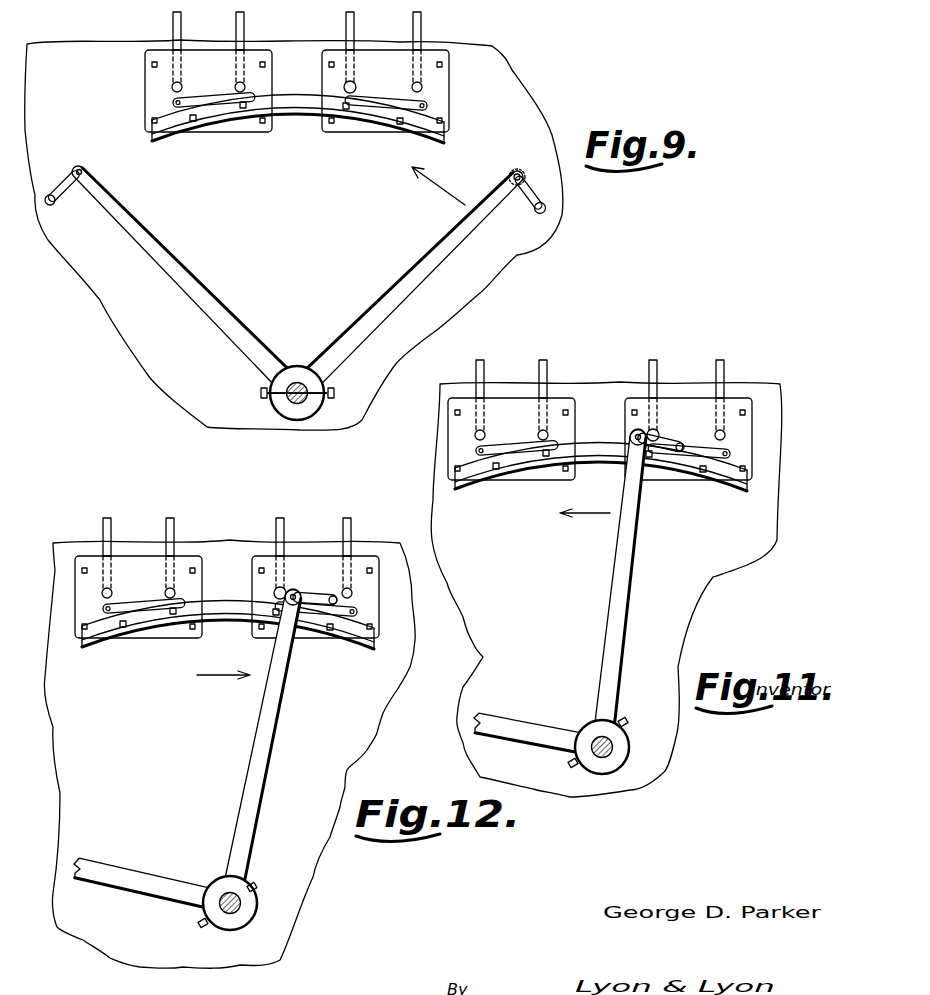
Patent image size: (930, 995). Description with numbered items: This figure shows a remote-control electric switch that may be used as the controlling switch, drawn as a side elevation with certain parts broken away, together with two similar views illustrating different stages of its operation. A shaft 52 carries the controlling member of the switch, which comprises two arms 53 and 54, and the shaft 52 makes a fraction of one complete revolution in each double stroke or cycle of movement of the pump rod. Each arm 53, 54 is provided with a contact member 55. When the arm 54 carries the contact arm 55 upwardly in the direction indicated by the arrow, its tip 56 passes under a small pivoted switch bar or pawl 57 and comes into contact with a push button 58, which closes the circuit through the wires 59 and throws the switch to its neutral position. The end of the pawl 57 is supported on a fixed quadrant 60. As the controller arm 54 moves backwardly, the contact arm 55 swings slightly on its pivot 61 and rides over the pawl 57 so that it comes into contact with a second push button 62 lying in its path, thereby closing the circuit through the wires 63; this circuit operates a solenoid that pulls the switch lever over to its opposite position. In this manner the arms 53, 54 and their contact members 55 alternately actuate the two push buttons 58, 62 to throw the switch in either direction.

In FIG. 9, the shaft 52 is at (298, 384).
In FIG. 11, the shaft 52 is at (600, 745).
In FIG. 12, the shaft 52 is at (230, 893).
In FIG. 9, the arm 53 is at (159, 254).
In FIG. 11, the arm 53 is at (500, 728).
In FIG. 12, the arm 53 is at (111, 879).
In FIG. 9, the arm 54 is at (448, 253).
In FIG. 11, the arm 54 is at (616, 562).
In FIG. 12, the arm 54 is at (261, 720).
In FIG. 9, the contact member 55 is at (51, 196).
In FIG. 11, the contact member 55 is at (666, 436).
In FIG. 12, the contact member 55 is at (310, 592).
In FIG. 9, the tip 56 is at (540, 214).
In FIG. 11, the tip 56 is at (684, 452).
In FIG. 12, the tip 56 is at (328, 606).
In FIG. 9, the pivoted switch bar or pawl 57 is at (193, 100).
In FIG. 11, the pivoted switch bar or pawl 57 is at (496, 447).
In FIG. 12, the pivoted switch bar or pawl 57 is at (122, 606).
In FIG. 9, the push button 58 is at (354, 90).
In FIG. 11, the push button 58 is at (660, 442).
In FIG. 12, the push button 58 is at (278, 591).
In FIG. 9, the wires 59 is at (347, 30).
In FIG. 11, the wires 59 is at (655, 372).
In FIG. 12, the wires 59 is at (282, 520).
In FIG. 9, the fixed quadrant 60 is at (300, 102).
In FIG. 11, the fixed quadrant 60 is at (605, 442).
In FIG. 12, the fixed quadrant 60 is at (235, 612).
In FIG. 9, the pivot 61 is at (517, 174).
In FIG. 11, the pivot 61 is at (636, 430).
In FIG. 12, the pivot 61 is at (289, 590).
In FIG. 9, the push button 62 is at (440, 88).
In FIG. 11, the push button 62 is at (722, 436).
In FIG. 12, the push button 62 is at (349, 590).
In FIG. 9, the wires 63 is at (421, 32).
In FIG. 11, the wires 63 is at (726, 372).
In FIG. 12, the wires 63 is at (348, 518).